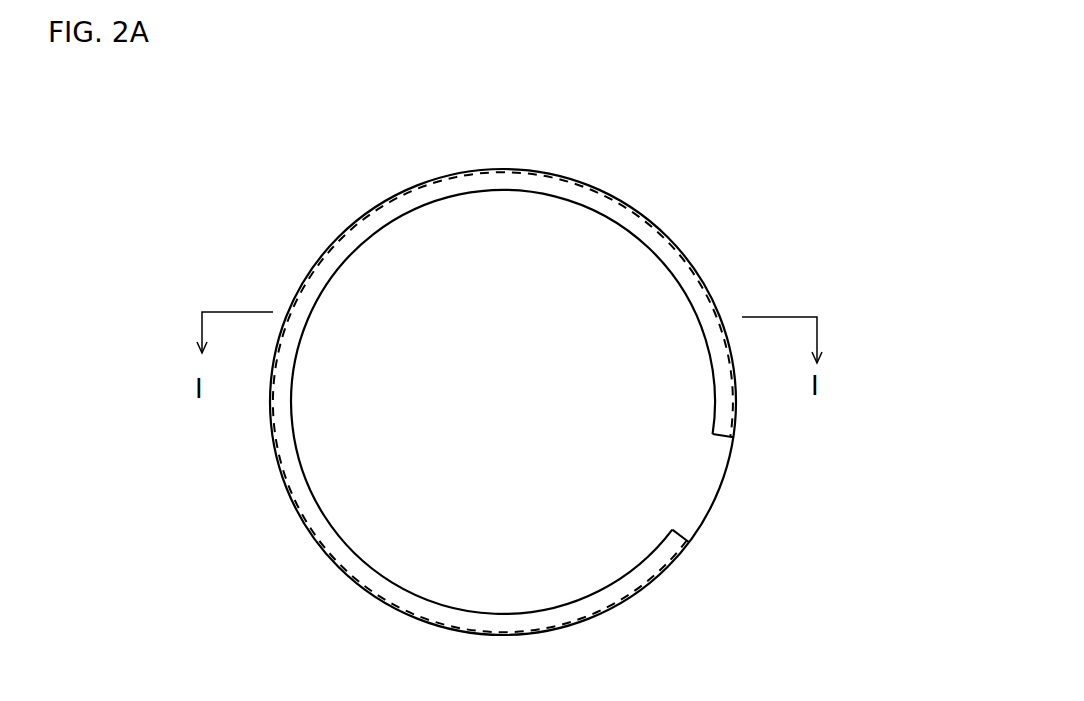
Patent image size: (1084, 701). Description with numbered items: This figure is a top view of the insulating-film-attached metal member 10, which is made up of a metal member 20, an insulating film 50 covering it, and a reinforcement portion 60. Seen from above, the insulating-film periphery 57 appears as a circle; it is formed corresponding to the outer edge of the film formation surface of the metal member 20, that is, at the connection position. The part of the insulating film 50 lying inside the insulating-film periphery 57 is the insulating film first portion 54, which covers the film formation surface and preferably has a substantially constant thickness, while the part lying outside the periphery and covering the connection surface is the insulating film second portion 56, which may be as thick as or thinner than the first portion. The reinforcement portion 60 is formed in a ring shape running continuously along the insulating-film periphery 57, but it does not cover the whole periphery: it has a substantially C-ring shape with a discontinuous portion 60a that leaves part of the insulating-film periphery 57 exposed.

The insulating-film-attached metal member 10 is at (829, 218).
The metal member 20 is at (235, 511).
The insulating film 50 is at (650, 315).
The insulating film first portion 54 is at (438, 252).
The insulating film second portion 56 is at (743, 451).
The insulating-film periphery 57 is at (493, 162).
The reinforcement portion 60 is at (630, 213).
The discontinuous portion 60a is at (730, 493).